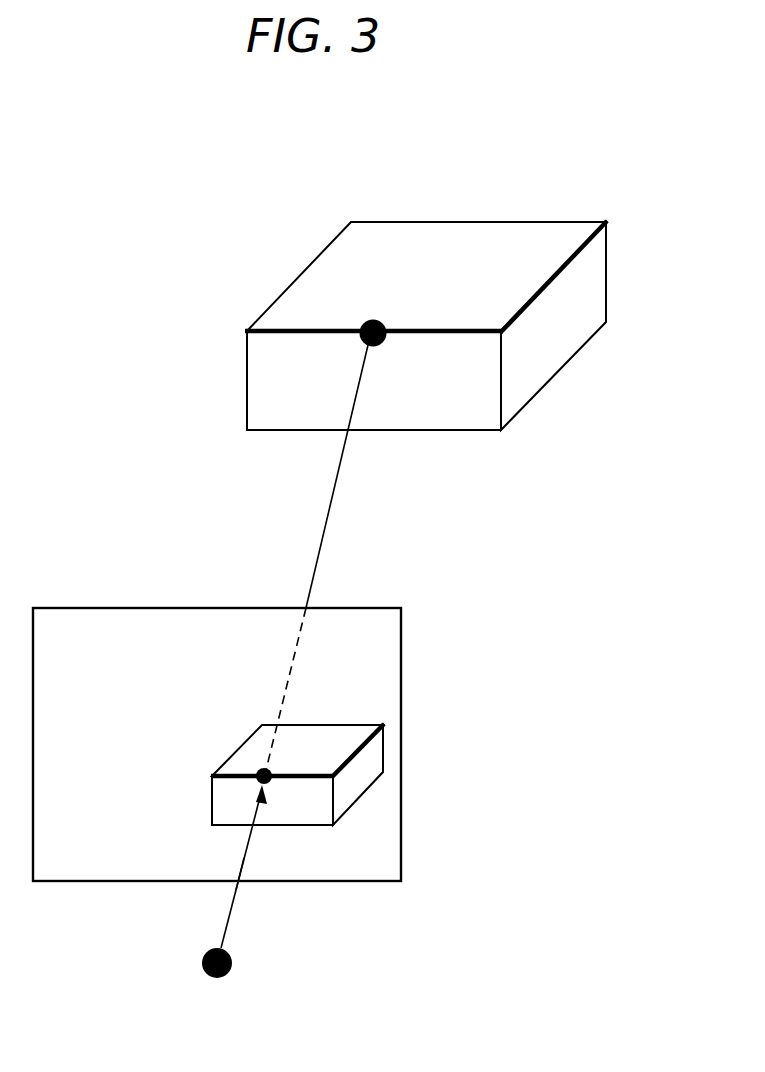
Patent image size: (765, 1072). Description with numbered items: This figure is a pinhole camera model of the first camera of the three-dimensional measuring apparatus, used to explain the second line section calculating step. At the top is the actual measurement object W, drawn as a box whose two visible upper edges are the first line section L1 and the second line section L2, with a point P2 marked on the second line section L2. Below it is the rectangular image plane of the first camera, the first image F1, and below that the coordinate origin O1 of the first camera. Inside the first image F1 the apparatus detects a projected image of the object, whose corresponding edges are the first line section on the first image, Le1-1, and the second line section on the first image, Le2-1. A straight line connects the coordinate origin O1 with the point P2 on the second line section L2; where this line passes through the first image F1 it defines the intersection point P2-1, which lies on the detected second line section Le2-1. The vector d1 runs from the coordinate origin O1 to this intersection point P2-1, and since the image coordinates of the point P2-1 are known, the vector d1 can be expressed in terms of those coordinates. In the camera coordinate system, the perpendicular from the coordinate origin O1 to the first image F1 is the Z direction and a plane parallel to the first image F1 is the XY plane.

The measurement object W is at (334, 190).
The first line section L1 is at (539, 293).
The second line section L2 is at (278, 329).
The point on the second line section P2 is at (381, 346).
The first image F1 is at (100, 597).
The second line section on the first image Le2-1 is at (237, 774).
The first line section on the first image Le1-1 is at (365, 748).
The intersection point P2-1 is at (268, 783).
The vector d1 is at (242, 853).
The coordinate origin of the first camera O1 is at (230, 974).